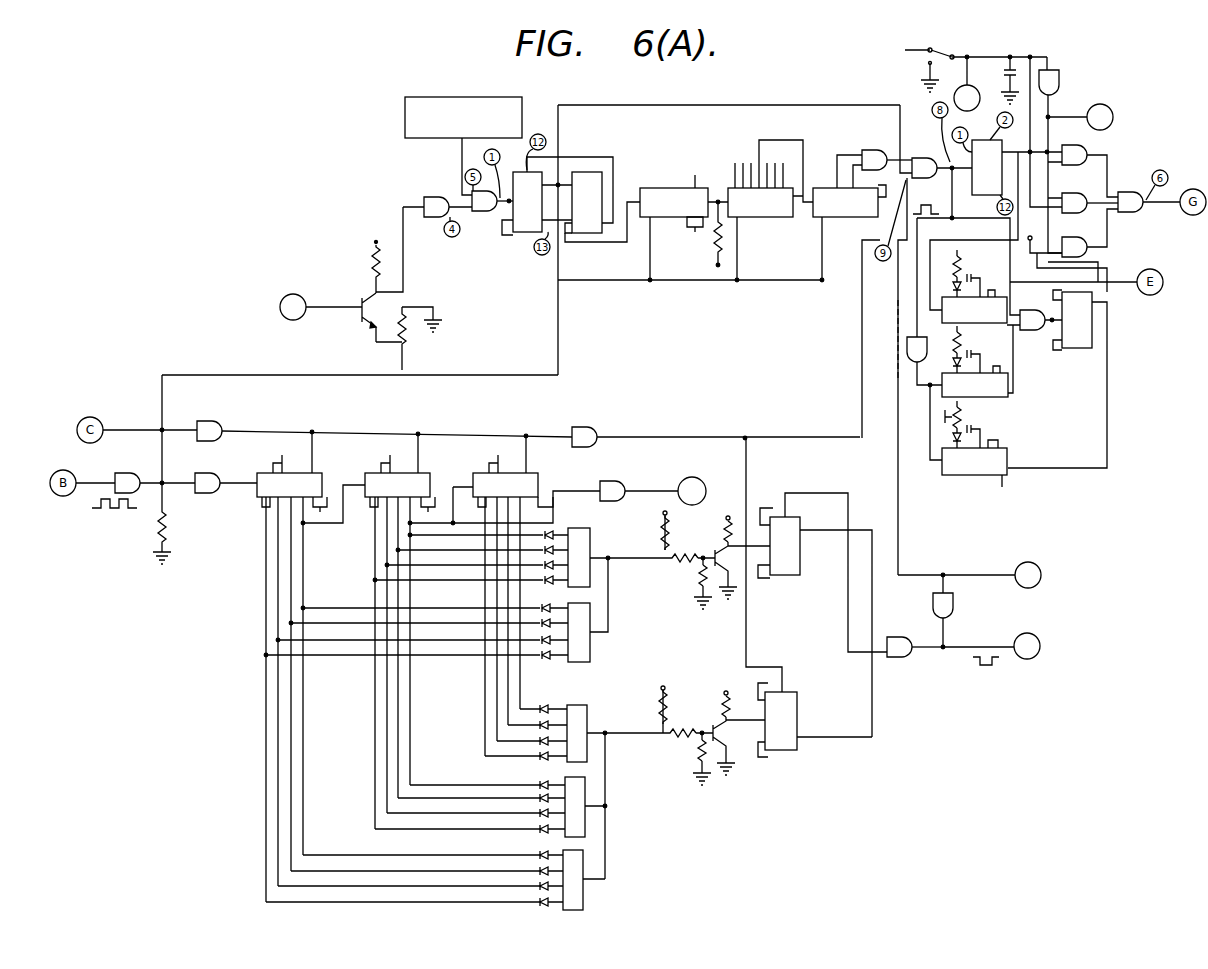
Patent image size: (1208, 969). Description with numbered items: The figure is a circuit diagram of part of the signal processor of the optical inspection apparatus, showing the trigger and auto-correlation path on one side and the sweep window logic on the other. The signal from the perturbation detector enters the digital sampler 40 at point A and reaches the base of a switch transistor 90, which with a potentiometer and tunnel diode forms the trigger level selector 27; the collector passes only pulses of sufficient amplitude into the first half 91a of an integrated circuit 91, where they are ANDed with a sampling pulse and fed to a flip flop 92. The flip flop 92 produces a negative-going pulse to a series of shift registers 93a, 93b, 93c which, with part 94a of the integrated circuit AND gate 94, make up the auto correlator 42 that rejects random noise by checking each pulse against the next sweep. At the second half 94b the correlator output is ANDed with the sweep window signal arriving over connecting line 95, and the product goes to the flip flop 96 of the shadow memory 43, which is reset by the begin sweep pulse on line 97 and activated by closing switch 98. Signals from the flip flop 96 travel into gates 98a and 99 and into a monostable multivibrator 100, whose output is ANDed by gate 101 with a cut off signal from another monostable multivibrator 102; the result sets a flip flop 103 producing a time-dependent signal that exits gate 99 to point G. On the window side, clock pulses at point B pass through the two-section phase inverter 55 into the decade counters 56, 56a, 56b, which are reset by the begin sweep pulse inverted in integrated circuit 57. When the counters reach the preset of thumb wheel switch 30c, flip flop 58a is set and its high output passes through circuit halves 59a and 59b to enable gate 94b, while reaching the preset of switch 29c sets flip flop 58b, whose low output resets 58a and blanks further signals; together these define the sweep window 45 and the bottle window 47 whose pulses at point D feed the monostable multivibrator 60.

The sweep window 45 is at (437, 92).
The digital sampler 40 is at (395, 215).
The trigger level selector 27 is at (361, 306).
The switch transistor 90 is at (366, 316).
The first half of integrated circuit 91a is at (432, 217).
The integrated circuit 91 is at (478, 220).
The flip flop 92 is at (521, 230).
The auto correlator 42 is at (722, 235).
The integrated circuit shift register 93a is at (684, 228).
The integrated circuit shift register 93b is at (770, 211).
The integrated circuit shift register 93c is at (849, 218).
The part of integrated circuit AND gate 94a is at (882, 150).
The second half of integrated circuit AND gate 94b is at (940, 186).
The integrated circuit AND gate 94 is at (922, 153).
The connecting line 95 is at (898, 300).
The line 97 is at (860, 336).
The flip flop 96 is at (989, 225).
The switch 98 is at (950, 50).
The shadow memory 43 is at (1078, 104).
The gate 98a is at (1090, 152).
The gate 99 is at (1090, 248).
The monostable multivibrator 100 is at (974, 286).
The gate 101 is at (1035, 330).
The monostable multivibrator 102 is at (990, 448).
The flip flop 103 is at (1078, 348).
The integrated circuit 57 is at (215, 428).
The phase inverter 55 is at (128, 475).
The first integrated circuit decade counter 56 is at (398, 667).
The decade counter 56a is at (482, 631).
The decade counter 56b is at (513, 596).
The thumb wheel switch 30c is at (583, 548).
The thumb wheel switch 29c is at (578, 723).
The flip flop 58a is at (783, 567).
The flip flop 58b is at (793, 720).
The integrated circuit half 59a is at (895, 657).
The integrated circuit half 59b is at (937, 603).
The monostable multivibrator 60 is at (951, 647).
The bottle window 47 is at (960, 566).